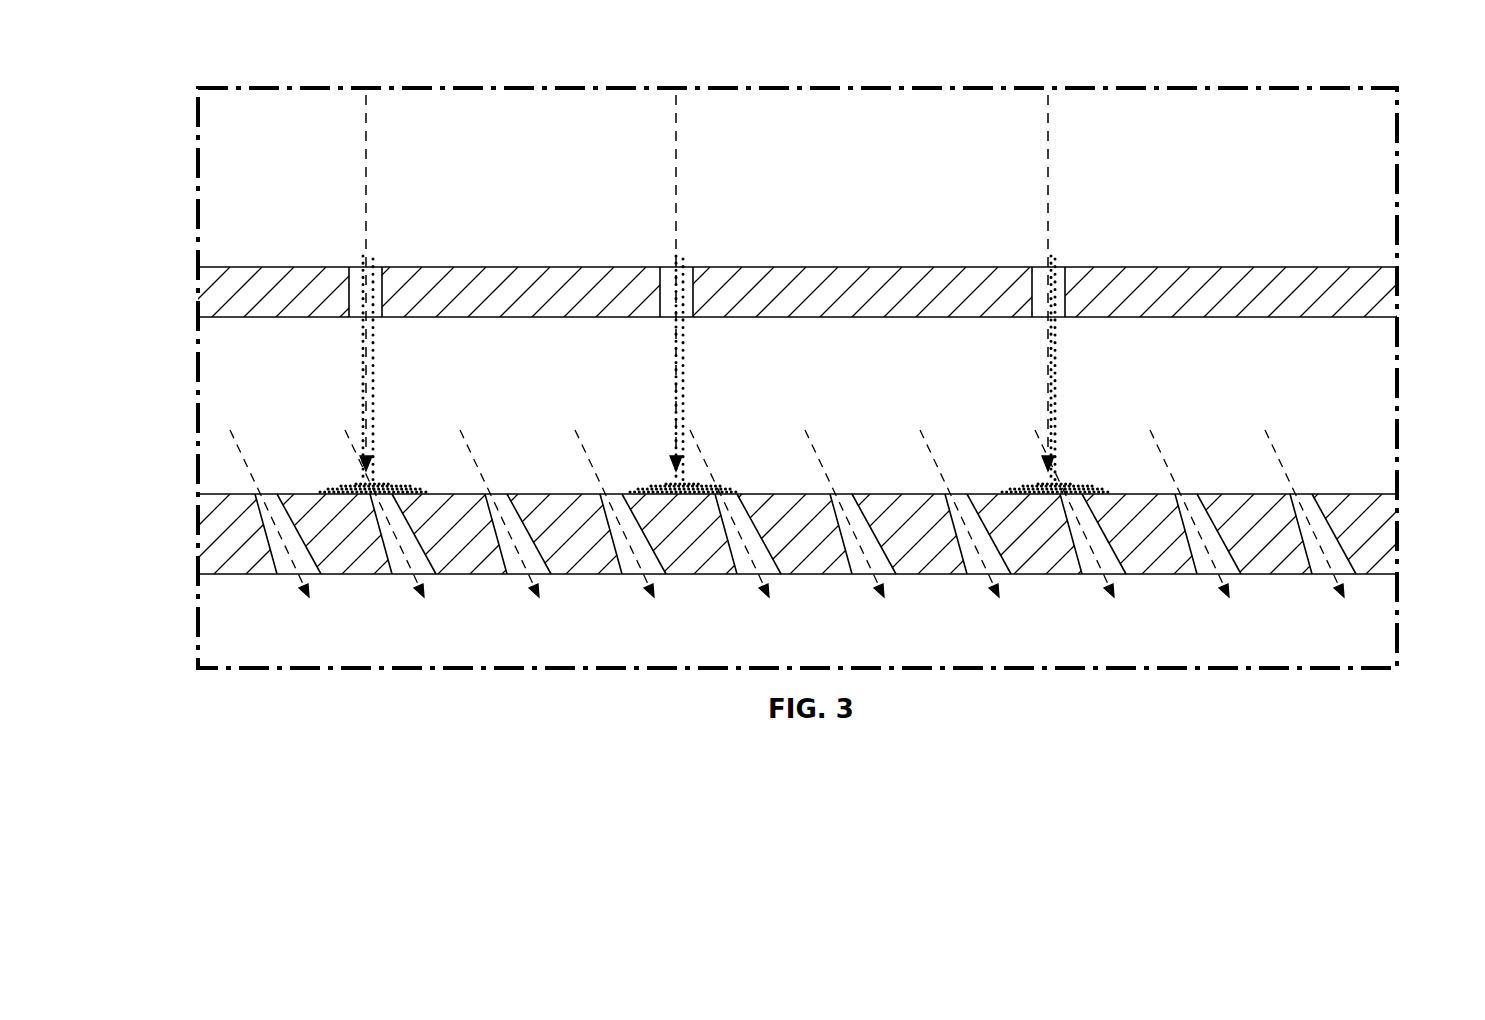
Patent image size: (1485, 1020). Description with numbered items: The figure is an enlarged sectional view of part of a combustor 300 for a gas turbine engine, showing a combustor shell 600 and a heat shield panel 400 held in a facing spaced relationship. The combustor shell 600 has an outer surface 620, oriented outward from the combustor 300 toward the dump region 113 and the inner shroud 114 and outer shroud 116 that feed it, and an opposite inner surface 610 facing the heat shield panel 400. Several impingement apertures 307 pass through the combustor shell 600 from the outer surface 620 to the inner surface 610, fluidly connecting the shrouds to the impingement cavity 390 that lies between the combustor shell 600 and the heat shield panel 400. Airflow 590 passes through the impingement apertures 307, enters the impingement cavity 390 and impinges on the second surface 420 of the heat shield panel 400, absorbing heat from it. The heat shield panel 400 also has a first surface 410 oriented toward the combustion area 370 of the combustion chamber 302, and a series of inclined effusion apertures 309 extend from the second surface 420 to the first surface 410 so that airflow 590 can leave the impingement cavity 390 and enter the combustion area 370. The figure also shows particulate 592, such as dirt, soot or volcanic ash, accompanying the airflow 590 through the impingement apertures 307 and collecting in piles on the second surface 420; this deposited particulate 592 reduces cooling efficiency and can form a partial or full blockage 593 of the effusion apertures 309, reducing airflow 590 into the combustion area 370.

The combustor 300 is at (186, 63).
The dump region 113 is at (797, 177).
The inner shroud 114 is at (797, 177).
The outer shroud 116 is at (922, 165).
The airflow 590 is at (367, 136).
The particulate 592 is at (357, 388).
The blockage 593 is at (393, 503).
The impingement apertures 307 is at (383, 292).
The combustor shell 600 is at (1375, 282).
The outer surface 620 is at (1378, 267).
The inner surface 610 is at (1383, 318).
The impingement cavity 390 is at (254, 356).
The heat shield panel 400 is at (1373, 542).
The second surface 420 is at (1382, 493).
The first surface 410 is at (1383, 576).
The effusion apertures 309 is at (269, 546).
The combustion chamber 302 is at (885, 647).
The combustion area 370 is at (953, 660).